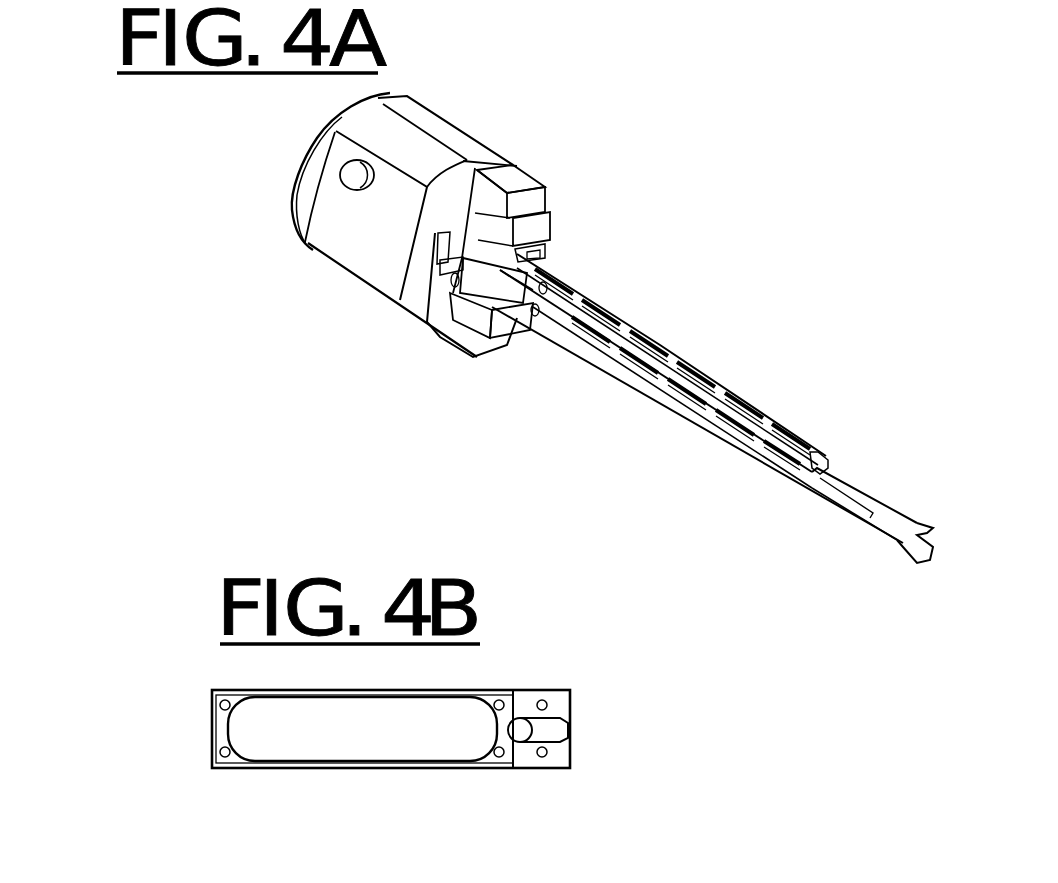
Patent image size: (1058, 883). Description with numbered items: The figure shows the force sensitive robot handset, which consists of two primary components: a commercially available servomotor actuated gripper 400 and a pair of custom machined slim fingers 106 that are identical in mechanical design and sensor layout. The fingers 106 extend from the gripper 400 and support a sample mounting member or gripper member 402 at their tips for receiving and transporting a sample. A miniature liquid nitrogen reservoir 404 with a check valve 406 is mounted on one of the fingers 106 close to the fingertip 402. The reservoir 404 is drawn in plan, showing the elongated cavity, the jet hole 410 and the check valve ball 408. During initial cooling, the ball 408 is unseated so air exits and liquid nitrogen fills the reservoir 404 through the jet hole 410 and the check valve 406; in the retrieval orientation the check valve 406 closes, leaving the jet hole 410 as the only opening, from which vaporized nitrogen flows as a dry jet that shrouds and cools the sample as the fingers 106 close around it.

In FIG. 4A, the servomotor actuated gripper 400 is at (485, 120).
In FIG. 4A, the slim fingers 106 is at (677, 358).
In FIG. 4A, the miniature liquid nitrogen reservoir 404 is at (812, 500).
In FIG. 4B, the miniature liquid nitrogen reservoir 404 is at (486, 674).
In FIG. 4A, the gripper member 402 is at (912, 560).
In FIG. 4B, the jet hole 410 is at (228, 730).
In FIG. 4B, the check valve ball 408 is at (510, 748).
In FIG. 4B, the check valve 406 is at (542, 758).